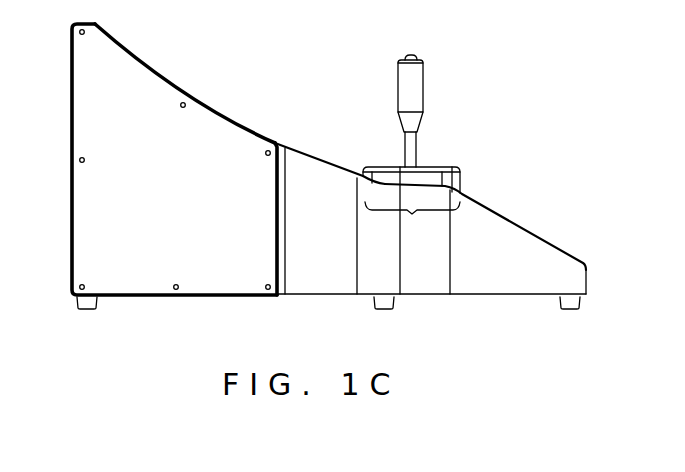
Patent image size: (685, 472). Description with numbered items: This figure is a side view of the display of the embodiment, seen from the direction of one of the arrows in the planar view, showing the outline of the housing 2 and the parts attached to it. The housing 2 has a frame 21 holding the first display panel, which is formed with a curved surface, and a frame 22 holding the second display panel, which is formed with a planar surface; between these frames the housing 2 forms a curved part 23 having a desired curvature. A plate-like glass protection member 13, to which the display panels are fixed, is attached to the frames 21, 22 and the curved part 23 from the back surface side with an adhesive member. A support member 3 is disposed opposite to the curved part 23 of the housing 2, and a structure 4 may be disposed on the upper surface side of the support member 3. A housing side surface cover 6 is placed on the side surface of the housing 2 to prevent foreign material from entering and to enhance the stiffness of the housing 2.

The housing 2 is at (578, 277).
The support member 3 is at (458, 166).
The structure 4 is at (413, 90).
The housing side surface cover 6 is at (193, 280).
The protection member 13 is at (263, 138).
The frame 21 is at (180, 91).
The frame 22 is at (531, 232).
The curved part 23 is at (413, 214).